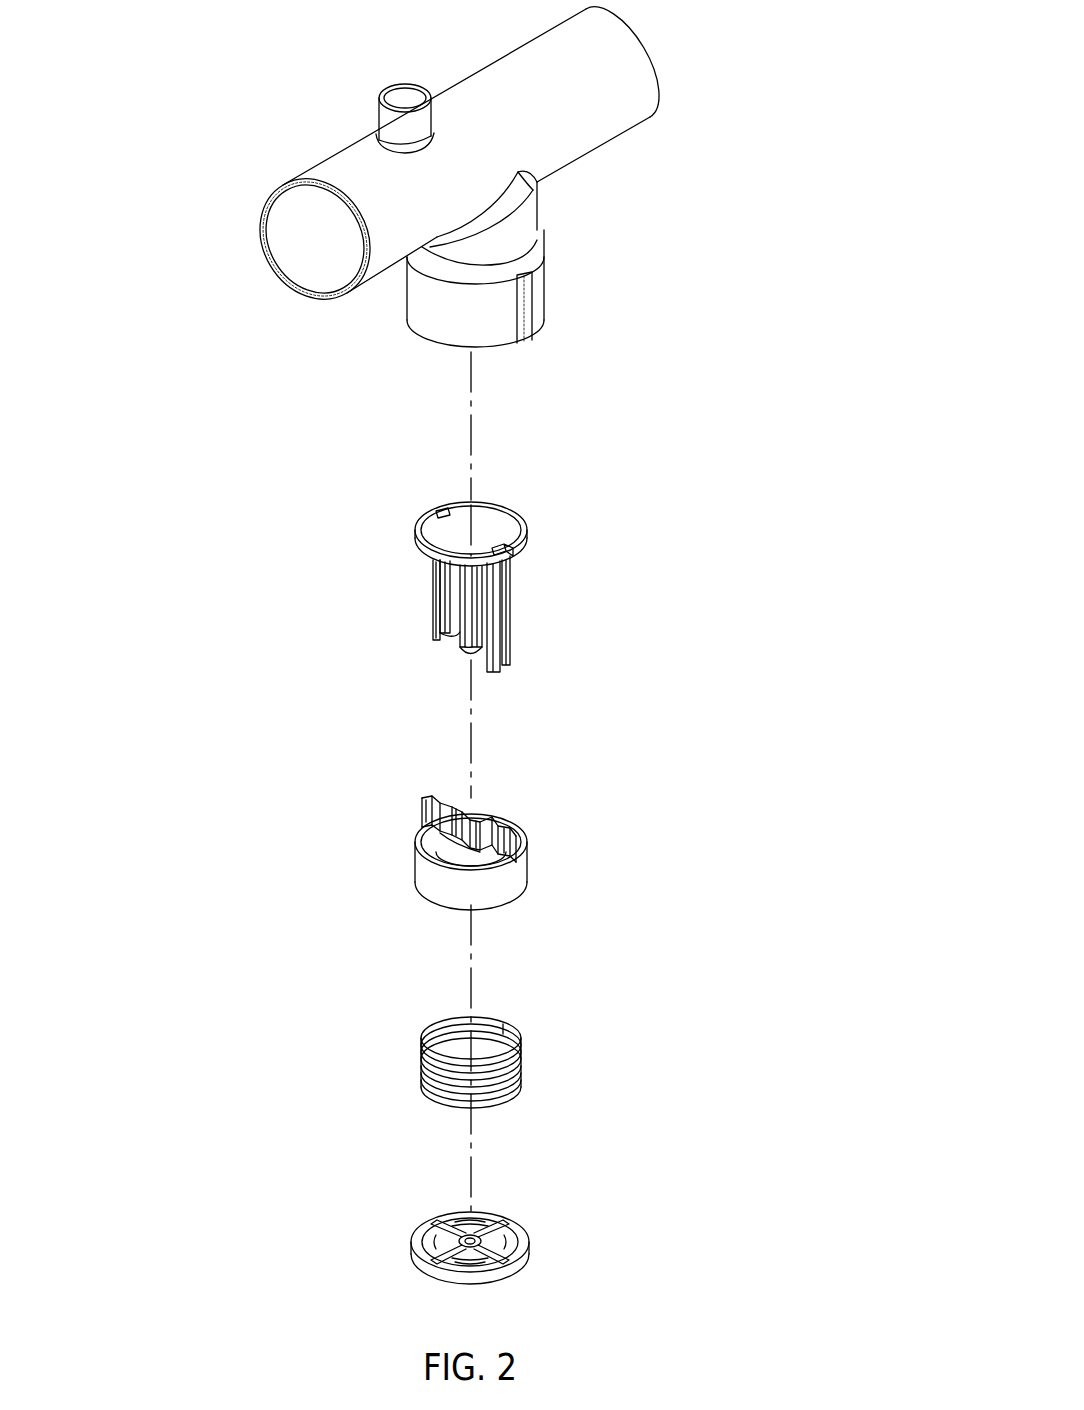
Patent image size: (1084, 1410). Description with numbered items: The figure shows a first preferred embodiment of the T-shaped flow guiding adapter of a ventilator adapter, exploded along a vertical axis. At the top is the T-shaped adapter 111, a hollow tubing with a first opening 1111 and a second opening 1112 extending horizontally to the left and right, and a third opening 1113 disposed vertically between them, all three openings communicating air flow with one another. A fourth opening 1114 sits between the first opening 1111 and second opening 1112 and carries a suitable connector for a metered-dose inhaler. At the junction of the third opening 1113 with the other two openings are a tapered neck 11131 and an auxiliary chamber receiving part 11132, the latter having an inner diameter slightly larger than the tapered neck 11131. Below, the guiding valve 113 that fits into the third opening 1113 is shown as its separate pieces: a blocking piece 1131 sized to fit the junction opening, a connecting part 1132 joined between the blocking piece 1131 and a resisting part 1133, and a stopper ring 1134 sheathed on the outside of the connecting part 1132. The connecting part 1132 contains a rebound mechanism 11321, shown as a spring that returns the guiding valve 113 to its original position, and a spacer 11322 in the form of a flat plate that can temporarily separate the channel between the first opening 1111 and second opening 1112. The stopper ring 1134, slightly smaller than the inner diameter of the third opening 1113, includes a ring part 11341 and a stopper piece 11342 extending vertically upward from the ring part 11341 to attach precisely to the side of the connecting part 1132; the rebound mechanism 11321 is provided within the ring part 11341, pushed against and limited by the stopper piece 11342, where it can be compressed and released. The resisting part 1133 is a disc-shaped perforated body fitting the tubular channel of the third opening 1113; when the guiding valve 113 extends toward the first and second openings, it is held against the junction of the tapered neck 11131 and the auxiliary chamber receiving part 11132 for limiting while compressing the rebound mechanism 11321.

The T-shaped adapter 111 is at (312, 115).
The first opening 1111 is at (303, 258).
The second opening 1112 is at (645, 50).
The third opening 1113 is at (493, 357).
The tapered neck 11131 is at (523, 212).
The auxiliary chamber receiving part 11132 is at (543, 298).
The fourth opening 1114 is at (407, 100).
The guiding valve 113 is at (313, 712).
The blocking piece 1131 is at (500, 528).
The connecting part 1132 is at (420, 620).
The rebound mechanism 11321 is at (420, 1080).
The spacer 11322 is at (500, 632).
The resisting part 1133 is at (520, 1250).
The stopper ring 1134 is at (567, 860).
The ring part 11341 is at (443, 890).
The stopper piece 11342 is at (420, 813).